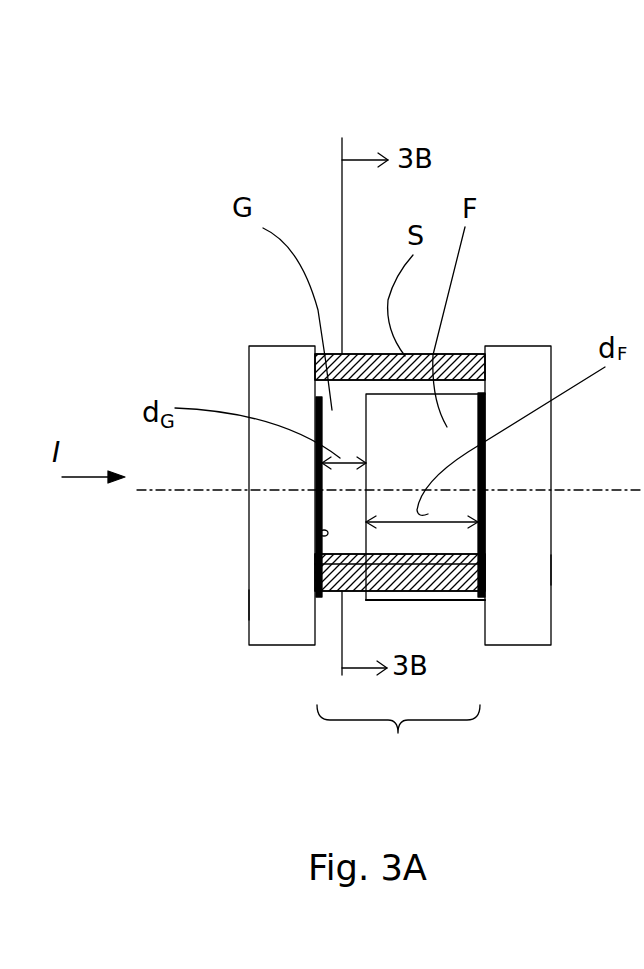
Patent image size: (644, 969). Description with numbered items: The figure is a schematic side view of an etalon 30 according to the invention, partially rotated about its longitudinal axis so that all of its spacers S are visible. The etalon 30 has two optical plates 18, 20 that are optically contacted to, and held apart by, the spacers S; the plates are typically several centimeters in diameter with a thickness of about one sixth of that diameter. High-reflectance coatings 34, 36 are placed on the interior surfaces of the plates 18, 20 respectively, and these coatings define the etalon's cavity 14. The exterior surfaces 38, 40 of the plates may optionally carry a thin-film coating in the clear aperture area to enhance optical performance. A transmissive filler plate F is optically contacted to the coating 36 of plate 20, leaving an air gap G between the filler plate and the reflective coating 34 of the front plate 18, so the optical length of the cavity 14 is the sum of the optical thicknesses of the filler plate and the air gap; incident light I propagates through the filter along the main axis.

The etalon 30 is at (420, 103).
The optical plate 18 is at (275, 368).
The optical plate 20 is at (517, 358).
The cavity 14 is at (398, 744).
The high-reflectance coating 34 is at (316, 540).
The high-reflectance coating 36 is at (473, 505).
The exterior surface 38 is at (238, 604).
The exterior surface 40 is at (553, 570).